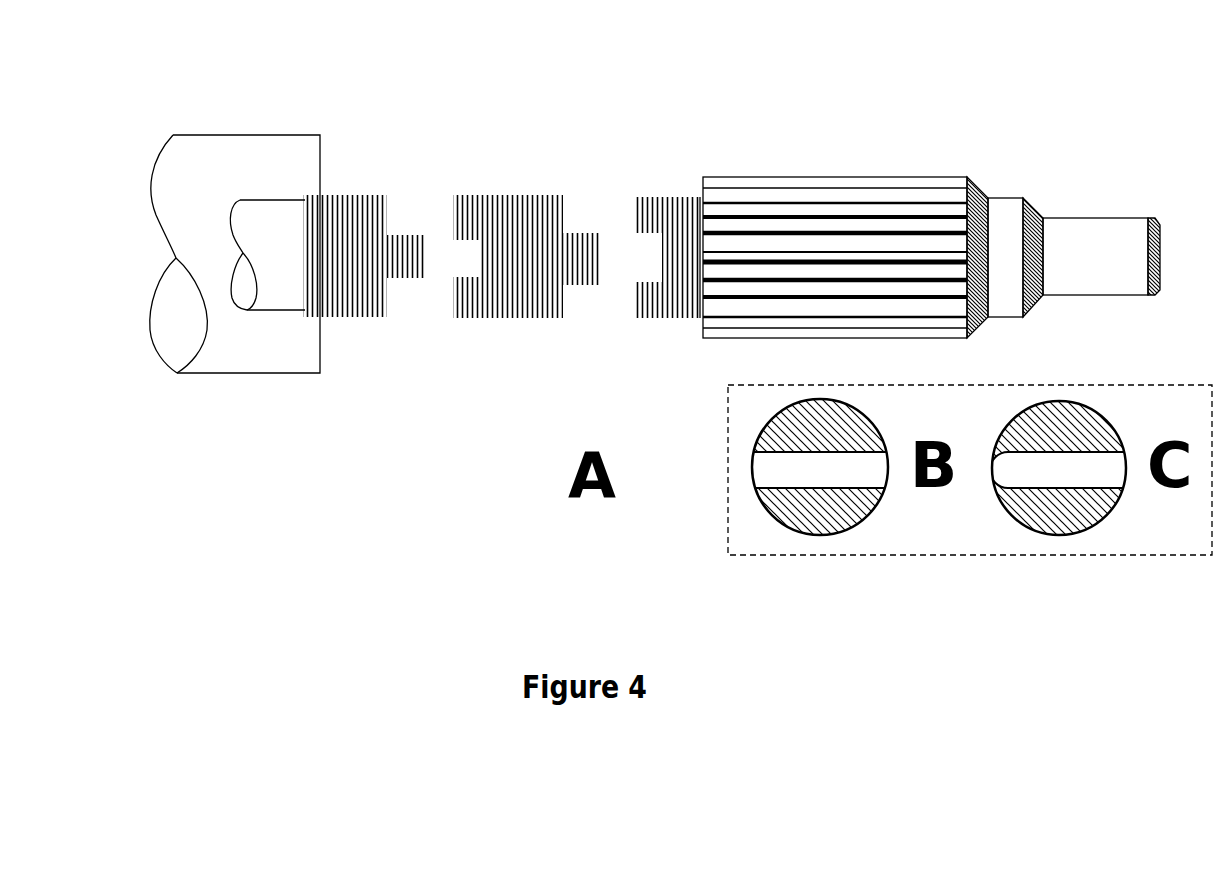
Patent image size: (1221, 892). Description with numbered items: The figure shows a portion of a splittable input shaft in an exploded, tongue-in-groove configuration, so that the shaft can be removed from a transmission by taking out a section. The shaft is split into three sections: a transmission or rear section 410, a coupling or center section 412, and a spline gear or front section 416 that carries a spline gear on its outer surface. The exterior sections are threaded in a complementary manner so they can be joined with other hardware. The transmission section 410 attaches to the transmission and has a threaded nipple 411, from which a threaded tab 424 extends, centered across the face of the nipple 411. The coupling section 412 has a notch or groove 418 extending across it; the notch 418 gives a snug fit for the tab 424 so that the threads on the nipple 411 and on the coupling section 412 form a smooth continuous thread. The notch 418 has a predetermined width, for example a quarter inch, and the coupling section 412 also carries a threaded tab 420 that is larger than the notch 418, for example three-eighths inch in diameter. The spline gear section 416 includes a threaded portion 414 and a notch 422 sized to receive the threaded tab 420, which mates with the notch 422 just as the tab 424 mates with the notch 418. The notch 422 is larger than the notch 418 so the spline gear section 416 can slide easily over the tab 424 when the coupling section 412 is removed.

The transmission section 410 is at (304, 213).
The threaded nipple 411 is at (349, 282).
The threaded tab 424 is at (412, 253).
The notch 418 is at (470, 252).
The coupling section 412 is at (517, 300).
The threaded tab 420 is at (581, 281).
The notch 422 is at (645, 253).
The threaded portion 414 is at (686, 170).
The spline gear section 416 is at (830, 194).